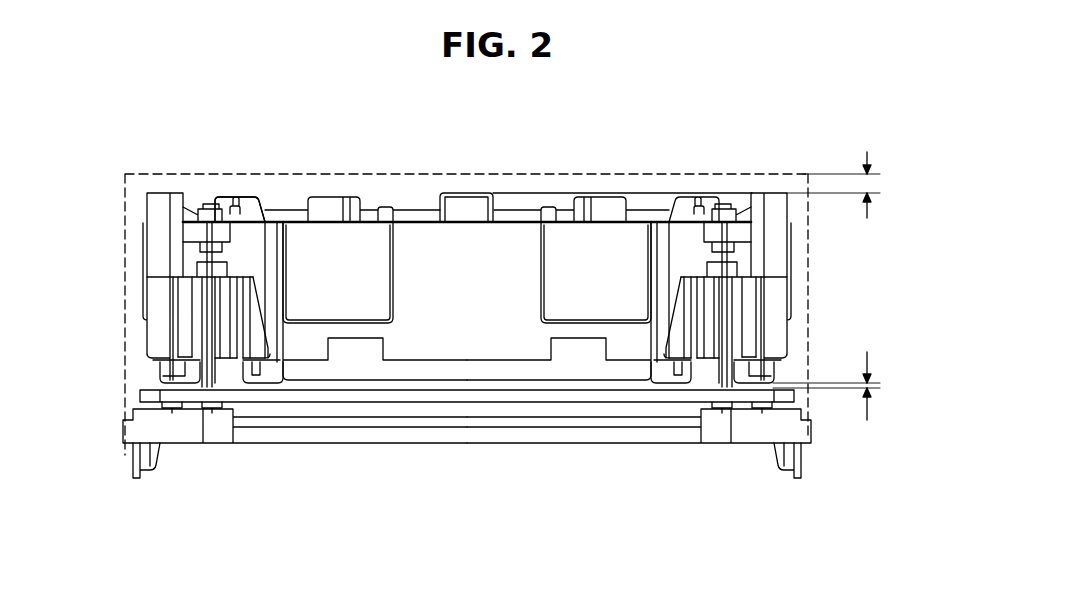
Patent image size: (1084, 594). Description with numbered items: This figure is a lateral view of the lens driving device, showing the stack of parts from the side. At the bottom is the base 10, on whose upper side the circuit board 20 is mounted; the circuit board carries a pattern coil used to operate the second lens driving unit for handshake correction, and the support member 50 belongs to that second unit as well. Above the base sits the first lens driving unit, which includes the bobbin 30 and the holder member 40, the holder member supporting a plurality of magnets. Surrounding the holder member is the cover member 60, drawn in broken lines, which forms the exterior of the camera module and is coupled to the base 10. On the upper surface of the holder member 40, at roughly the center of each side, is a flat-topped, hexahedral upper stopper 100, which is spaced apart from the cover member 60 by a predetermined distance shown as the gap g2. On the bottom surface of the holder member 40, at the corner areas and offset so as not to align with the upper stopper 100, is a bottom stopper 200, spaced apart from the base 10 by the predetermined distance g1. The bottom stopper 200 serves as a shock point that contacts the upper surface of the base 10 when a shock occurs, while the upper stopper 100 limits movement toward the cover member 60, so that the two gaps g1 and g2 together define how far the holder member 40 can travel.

The base 10 is at (377, 433).
The circuit board 20 is at (500, 398).
The bobbin 30 is at (332, 207).
The holder member 40 is at (413, 228).
The support member 50 is at (183, 373).
The cover member 60 is at (742, 176).
The upper stopper 100 is at (463, 203).
The bottom stopper 200 is at (693, 381).
The predetermined distance g1 is at (841, 386).
The gap g2 is at (848, 185).